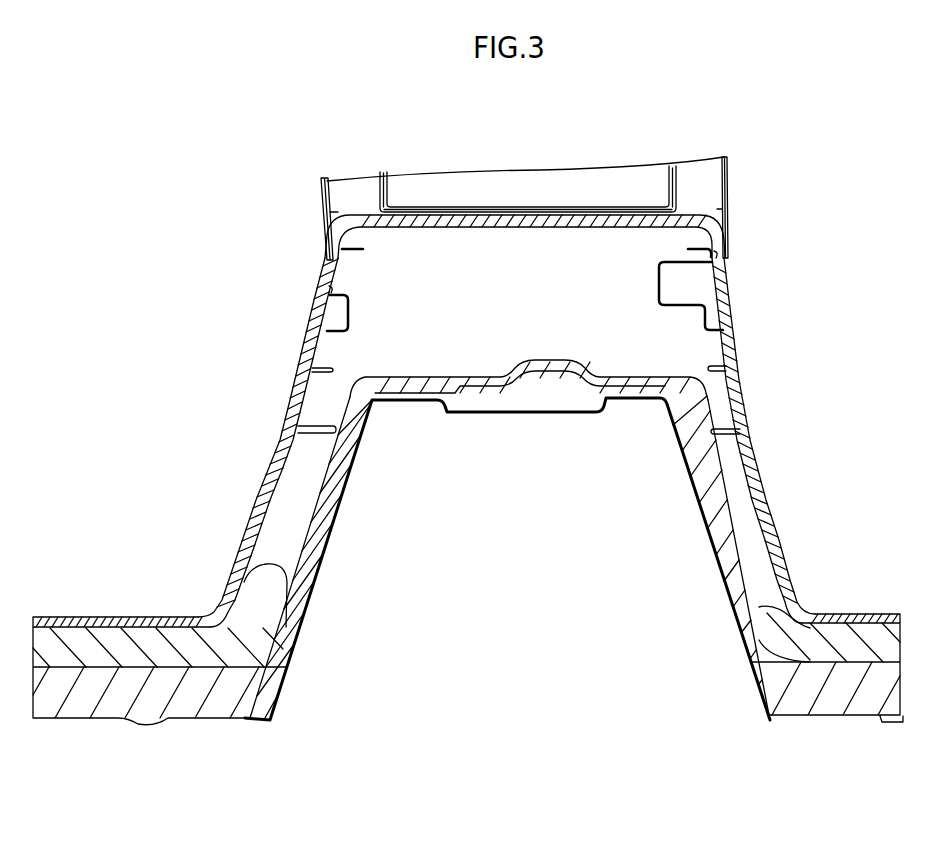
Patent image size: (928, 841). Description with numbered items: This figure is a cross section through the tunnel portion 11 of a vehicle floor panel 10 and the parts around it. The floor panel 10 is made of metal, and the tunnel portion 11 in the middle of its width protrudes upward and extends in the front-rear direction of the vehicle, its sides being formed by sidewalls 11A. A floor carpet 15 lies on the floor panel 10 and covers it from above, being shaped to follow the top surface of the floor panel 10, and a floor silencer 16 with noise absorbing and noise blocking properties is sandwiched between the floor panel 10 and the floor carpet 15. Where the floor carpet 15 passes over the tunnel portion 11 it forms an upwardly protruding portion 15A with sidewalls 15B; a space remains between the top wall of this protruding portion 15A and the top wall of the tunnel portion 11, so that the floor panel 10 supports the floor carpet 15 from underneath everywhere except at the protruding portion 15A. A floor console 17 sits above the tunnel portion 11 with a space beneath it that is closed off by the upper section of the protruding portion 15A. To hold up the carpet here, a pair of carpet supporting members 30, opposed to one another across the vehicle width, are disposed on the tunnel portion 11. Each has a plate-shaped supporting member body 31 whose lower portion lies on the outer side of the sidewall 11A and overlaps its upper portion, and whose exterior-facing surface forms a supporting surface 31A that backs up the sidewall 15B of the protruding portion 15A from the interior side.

The floor panel 10 is at (306, 607).
The tunnel portion 11 is at (410, 404).
The sidewall 11A is at (350, 465).
The floor carpet 15 is at (105, 619).
The protruding portion 15A is at (472, 229).
The sidewall 15B is at (300, 391).
The floor silencer 16 is at (328, 517).
The floor console 17 is at (322, 192).
The carpet supporting member 30 is at (343, 318).
The supporting member body 31 is at (316, 351).
The supporting surface 31A is at (333, 293).